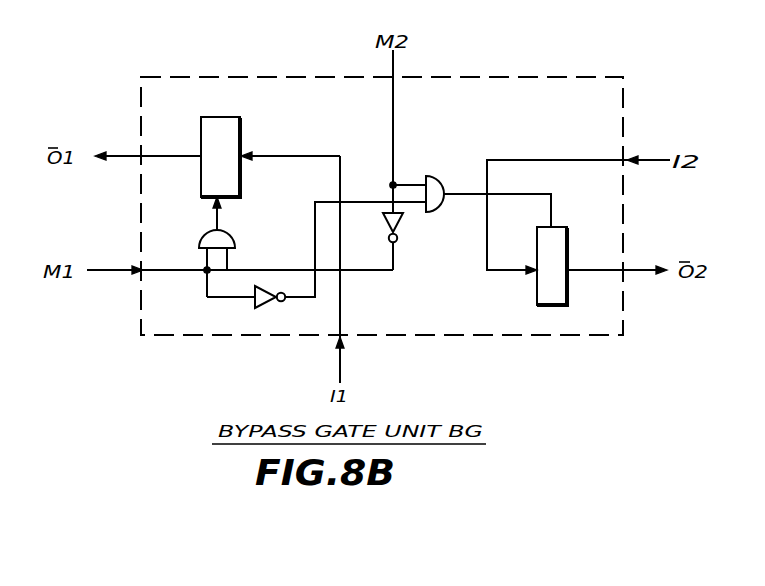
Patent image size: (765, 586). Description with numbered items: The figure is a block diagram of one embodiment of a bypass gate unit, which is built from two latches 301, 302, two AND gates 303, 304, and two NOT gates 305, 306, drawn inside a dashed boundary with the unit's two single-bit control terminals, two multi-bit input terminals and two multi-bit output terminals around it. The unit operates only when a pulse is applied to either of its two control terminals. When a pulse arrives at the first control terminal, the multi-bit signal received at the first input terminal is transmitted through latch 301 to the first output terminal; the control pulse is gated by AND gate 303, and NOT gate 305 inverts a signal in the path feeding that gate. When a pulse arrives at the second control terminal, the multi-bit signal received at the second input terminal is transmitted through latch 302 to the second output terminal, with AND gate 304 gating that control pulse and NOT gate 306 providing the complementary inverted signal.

The latch 301 is at (278, 96).
The latch 302 is at (602, 192).
The AND gate 303 is at (227, 230).
The AND gate 304 is at (434, 178).
The NOT gate 305 is at (298, 311).
The NOT gate 306 is at (397, 226).